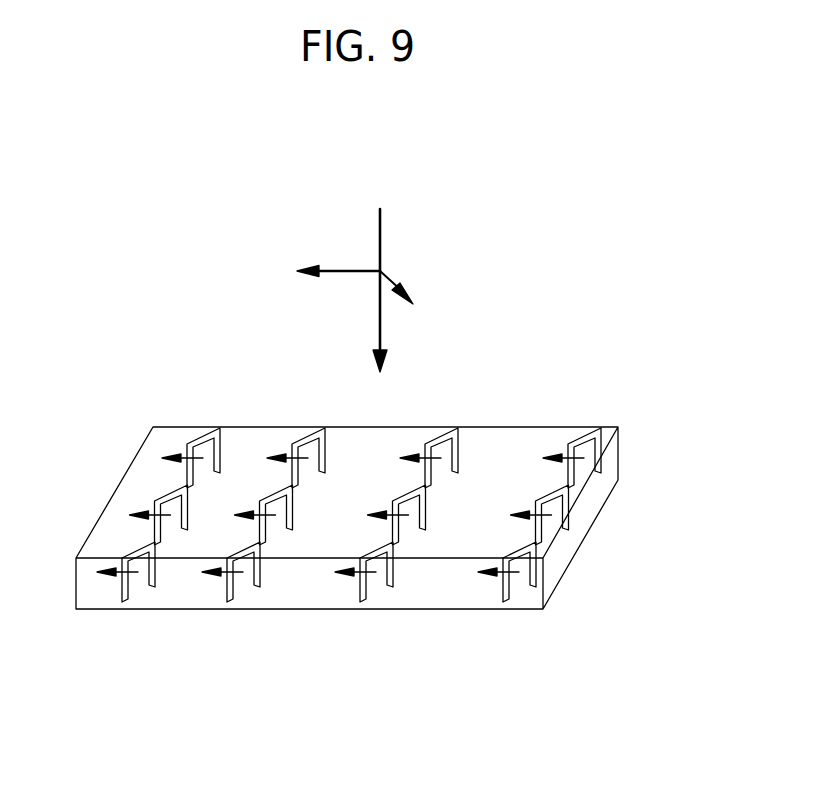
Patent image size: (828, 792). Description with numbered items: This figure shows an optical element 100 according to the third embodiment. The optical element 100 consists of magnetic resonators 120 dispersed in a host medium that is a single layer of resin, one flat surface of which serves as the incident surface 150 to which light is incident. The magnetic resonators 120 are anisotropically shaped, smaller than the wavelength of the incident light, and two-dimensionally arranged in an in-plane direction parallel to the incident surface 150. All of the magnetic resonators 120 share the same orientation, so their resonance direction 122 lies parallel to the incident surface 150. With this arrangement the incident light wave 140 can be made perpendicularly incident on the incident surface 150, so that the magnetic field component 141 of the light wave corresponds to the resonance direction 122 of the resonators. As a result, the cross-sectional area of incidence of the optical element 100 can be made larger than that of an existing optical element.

The optical element 100 is at (345, 519).
The magnetic resonator 120 is at (573, 442).
The resonance direction 122 is at (277, 460).
The incident light wave 140 is at (383, 223).
The magnetic field component 141 is at (333, 271).
The incident surface 150 is at (490, 442).